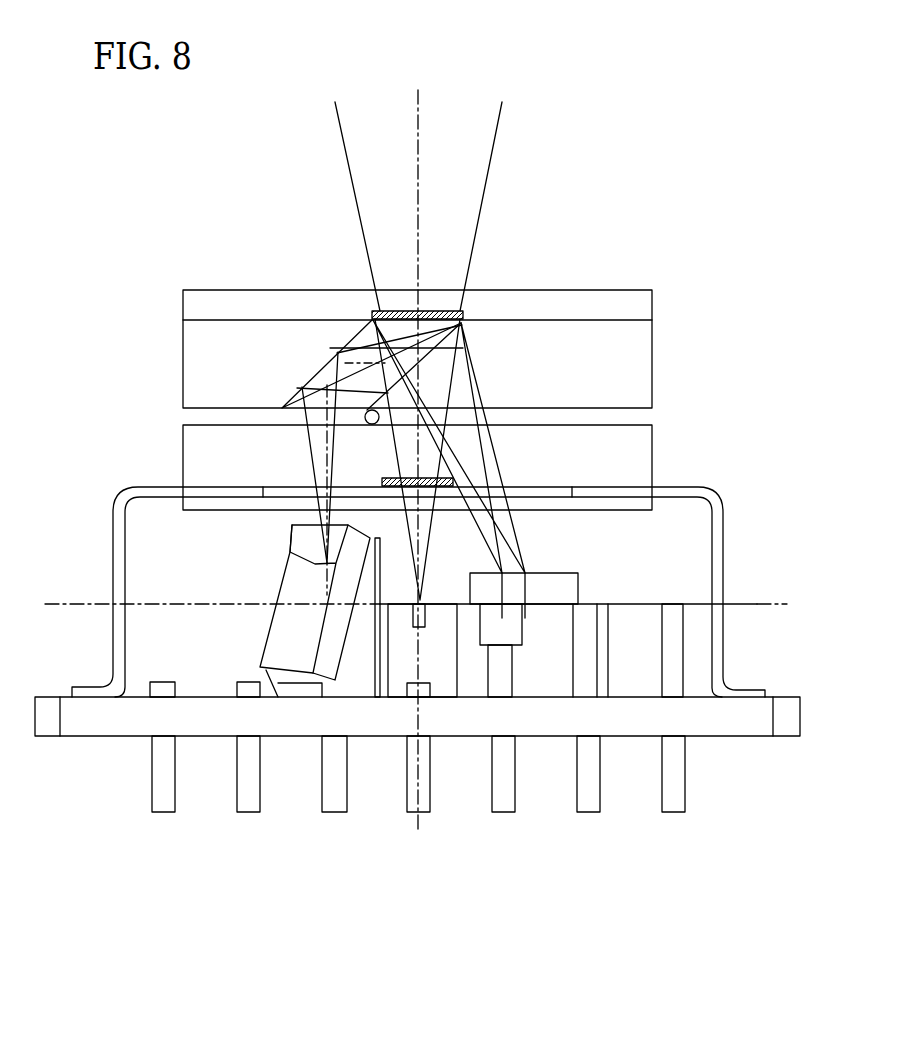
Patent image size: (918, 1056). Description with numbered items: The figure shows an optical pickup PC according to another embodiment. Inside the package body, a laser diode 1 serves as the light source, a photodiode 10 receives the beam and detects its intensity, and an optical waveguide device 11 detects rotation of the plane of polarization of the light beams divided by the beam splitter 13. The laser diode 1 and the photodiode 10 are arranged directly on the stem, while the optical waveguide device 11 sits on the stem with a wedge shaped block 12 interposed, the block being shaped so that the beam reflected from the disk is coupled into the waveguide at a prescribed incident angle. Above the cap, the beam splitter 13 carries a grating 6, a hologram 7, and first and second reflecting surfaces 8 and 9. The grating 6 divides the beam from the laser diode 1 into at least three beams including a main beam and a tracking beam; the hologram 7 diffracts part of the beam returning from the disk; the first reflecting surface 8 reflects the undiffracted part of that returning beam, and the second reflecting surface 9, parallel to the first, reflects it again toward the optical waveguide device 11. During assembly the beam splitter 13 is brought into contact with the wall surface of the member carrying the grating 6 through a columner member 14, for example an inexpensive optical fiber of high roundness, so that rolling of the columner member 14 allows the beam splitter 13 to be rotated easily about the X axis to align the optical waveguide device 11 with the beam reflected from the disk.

The laser diode 1 is at (425, 627).
The grating 6 is at (380, 478).
The hologram 7 is at (398, 310).
The first reflecting surface 8 is at (463, 348).
The second reflecting surface 9 is at (337, 353).
The photodiode 10 is at (578, 583).
The optical waveguide device 11 is at (278, 578).
The wedge shaped block 12 is at (357, 683).
The beam splitter 13 is at (660, 358).
The columner member 14 is at (365, 421).
The optical pickup PC is at (662, 147).